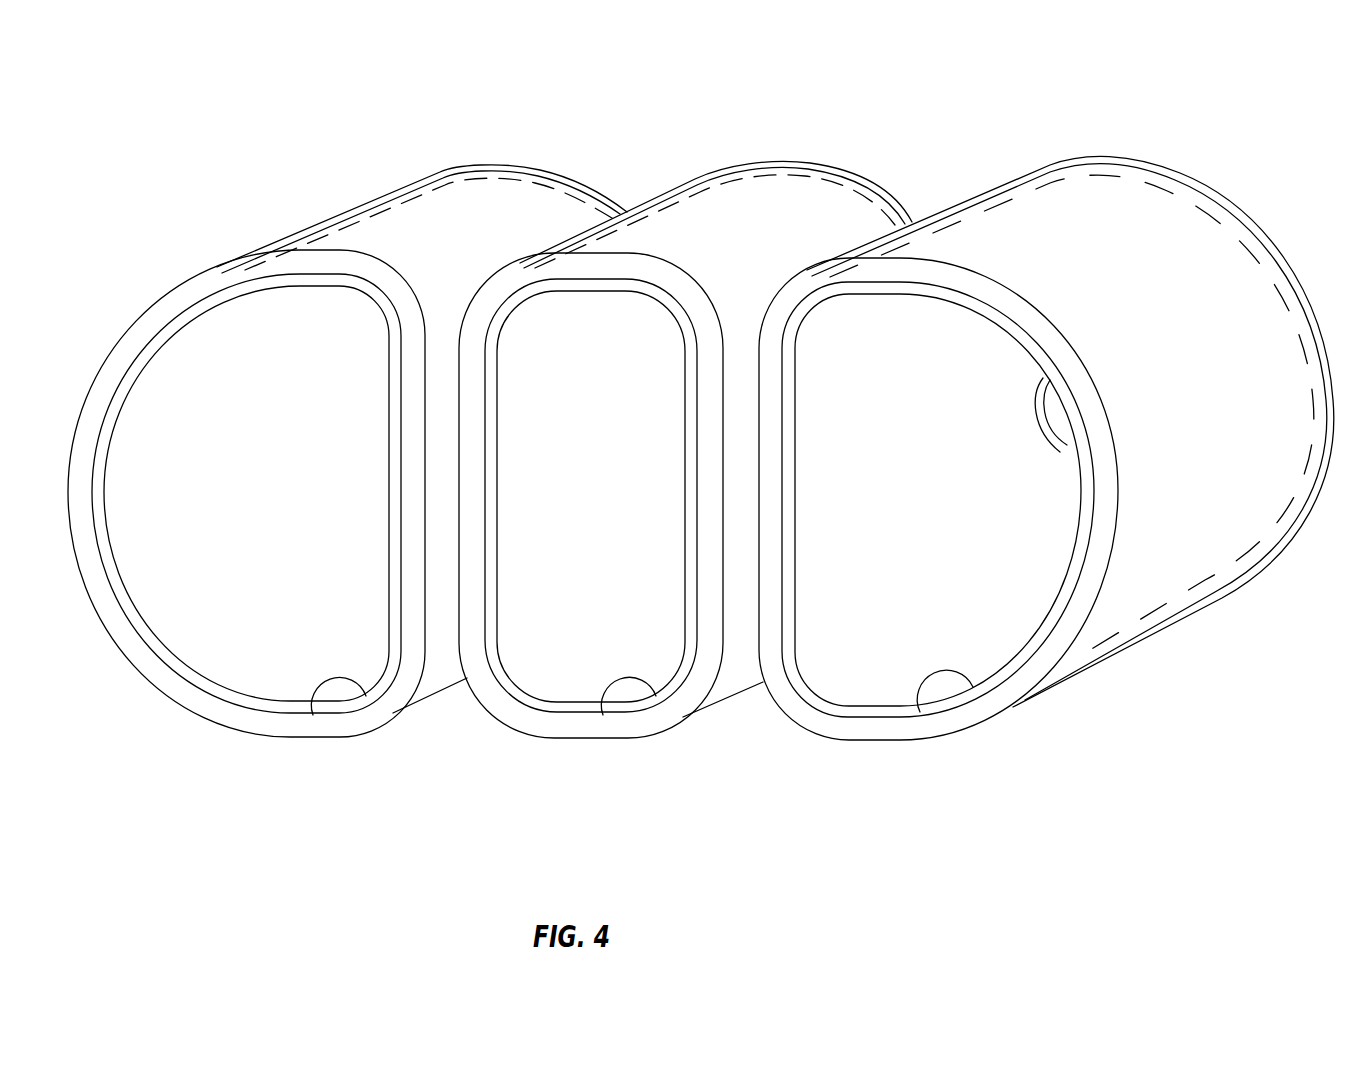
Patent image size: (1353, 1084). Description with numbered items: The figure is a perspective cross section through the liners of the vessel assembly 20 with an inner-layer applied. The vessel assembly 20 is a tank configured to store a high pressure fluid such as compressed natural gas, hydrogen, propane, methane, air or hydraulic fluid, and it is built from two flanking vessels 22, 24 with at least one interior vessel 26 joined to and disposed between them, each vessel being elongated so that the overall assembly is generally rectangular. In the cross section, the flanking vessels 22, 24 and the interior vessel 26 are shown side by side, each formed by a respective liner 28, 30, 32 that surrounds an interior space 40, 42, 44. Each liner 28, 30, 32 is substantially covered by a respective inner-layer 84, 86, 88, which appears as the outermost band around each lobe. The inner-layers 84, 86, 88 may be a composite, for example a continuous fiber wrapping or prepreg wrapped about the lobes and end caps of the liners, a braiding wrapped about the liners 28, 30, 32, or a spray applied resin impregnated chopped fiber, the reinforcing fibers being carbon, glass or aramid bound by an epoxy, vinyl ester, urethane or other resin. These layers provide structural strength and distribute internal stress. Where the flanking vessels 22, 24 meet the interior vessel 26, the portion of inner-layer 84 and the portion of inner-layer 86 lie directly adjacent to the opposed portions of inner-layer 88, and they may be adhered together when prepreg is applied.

The vessel assembly 20 is at (958, 150).
The flanking vessel 22 is at (188, 784).
The flanking vessel 24 is at (816, 784).
The interior vessel 26 is at (503, 784).
The liner 28 is at (313, 715).
The liner 30 is at (920, 712).
The liner 32 is at (603, 715).
The first lumen 40 is at (290, 584).
The second lumen 42 is at (926, 584).
The third lumen 44 is at (603, 584).
The inner-layer 84 is at (183, 705).
The inner-layer 86 is at (766, 725).
The inner-layer 88 is at (483, 707).